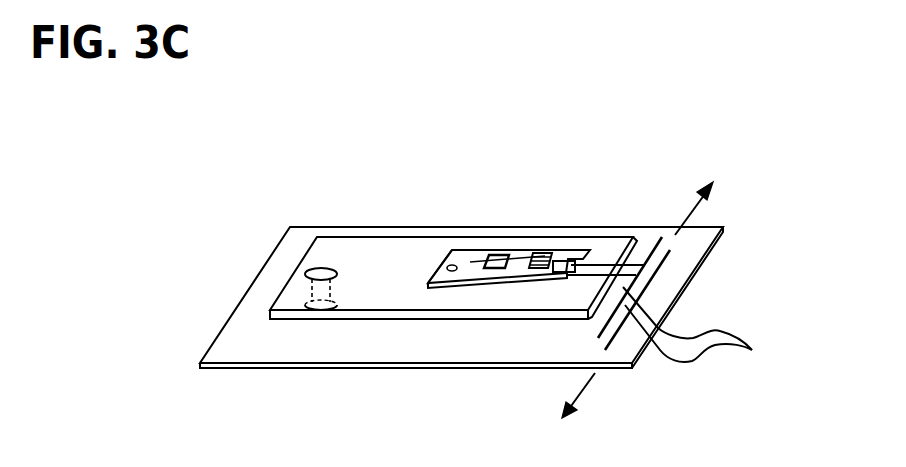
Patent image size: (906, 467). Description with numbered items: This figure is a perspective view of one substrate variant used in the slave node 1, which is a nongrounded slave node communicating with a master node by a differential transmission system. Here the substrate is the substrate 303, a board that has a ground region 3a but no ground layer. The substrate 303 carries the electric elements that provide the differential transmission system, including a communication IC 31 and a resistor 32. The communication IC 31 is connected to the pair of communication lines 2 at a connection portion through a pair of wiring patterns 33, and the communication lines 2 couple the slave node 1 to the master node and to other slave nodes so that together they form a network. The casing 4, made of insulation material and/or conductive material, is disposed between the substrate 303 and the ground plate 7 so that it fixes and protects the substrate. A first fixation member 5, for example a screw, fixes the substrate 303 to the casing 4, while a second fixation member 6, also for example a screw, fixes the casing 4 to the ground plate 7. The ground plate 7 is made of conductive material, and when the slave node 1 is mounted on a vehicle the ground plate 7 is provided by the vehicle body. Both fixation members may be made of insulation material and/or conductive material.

The slave node 1 is at (283, 197).
The communication lines 2 is at (688, 294).
The ground region 3a is at (457, 250).
The substrate 303 is at (493, 250).
The communication IC 31 is at (510, 250).
The resistor 32 is at (560, 250).
The wiring patterns 33 is at (562, 273).
The casing 4 is at (375, 300).
The first fixation member 5 is at (428, 246).
The second fixation member 6 is at (307, 270).
The ground plate 7 is at (240, 340).